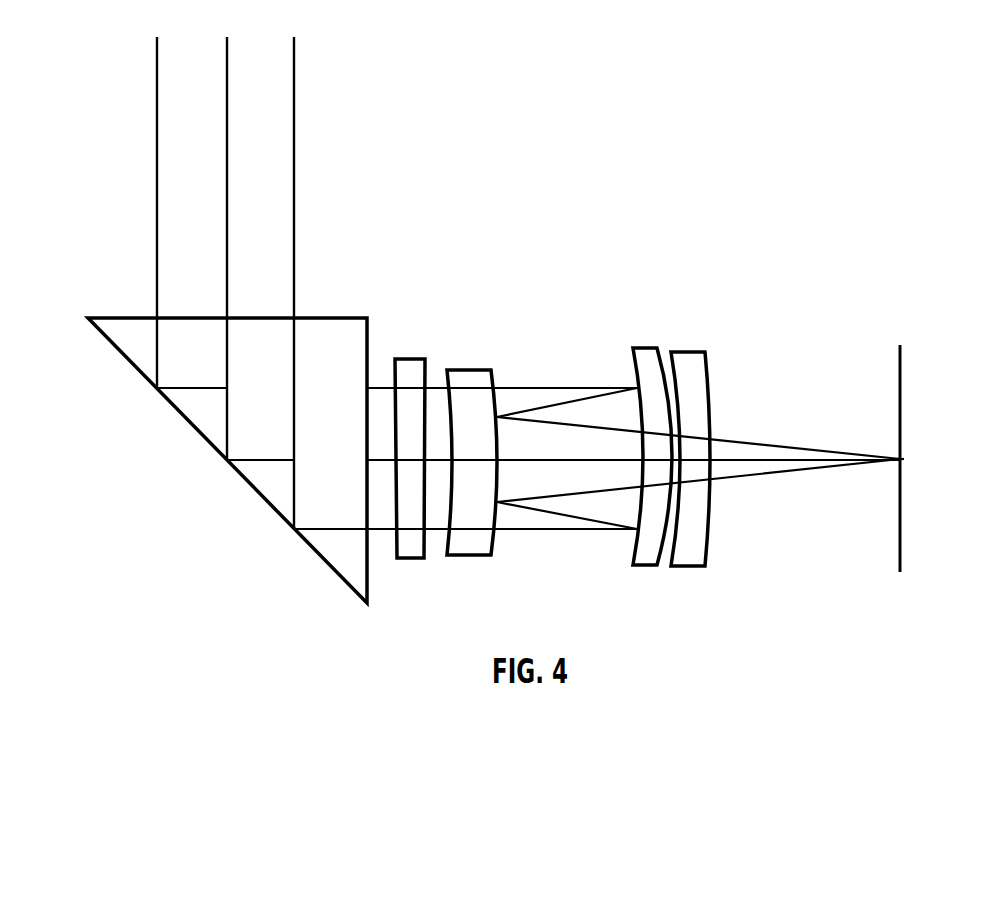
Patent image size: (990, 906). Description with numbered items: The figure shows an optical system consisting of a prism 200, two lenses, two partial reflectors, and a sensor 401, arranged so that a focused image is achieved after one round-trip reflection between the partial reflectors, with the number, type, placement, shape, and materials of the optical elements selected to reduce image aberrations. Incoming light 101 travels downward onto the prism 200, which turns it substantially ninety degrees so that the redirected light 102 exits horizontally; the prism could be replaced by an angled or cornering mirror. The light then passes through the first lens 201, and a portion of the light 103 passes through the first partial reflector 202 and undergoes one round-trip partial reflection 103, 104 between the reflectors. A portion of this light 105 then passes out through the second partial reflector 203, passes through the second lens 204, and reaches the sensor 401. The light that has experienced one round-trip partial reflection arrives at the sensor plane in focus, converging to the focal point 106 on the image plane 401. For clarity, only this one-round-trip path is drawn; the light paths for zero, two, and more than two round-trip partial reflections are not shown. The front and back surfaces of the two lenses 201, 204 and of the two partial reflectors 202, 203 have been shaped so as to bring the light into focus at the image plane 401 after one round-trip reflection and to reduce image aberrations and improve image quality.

The incoming light 101 is at (157, 172).
The reflected light beam 102 is at (163, 388).
The portion of the light passing through the first partial reflector 103 is at (512, 387).
The round-trip partial reflection light 104 is at (567, 403).
The portion of light passing out through the second partial reflector 105 is at (752, 440).
The focal point 106 is at (903, 460).
The prism 200 is at (340, 331).
The first lens 201 is at (405, 367).
The first partial reflector 202 is at (472, 378).
The second partial reflector 203 is at (650, 355).
The second lens 204 is at (690, 363).
The sensor 401 is at (903, 540).